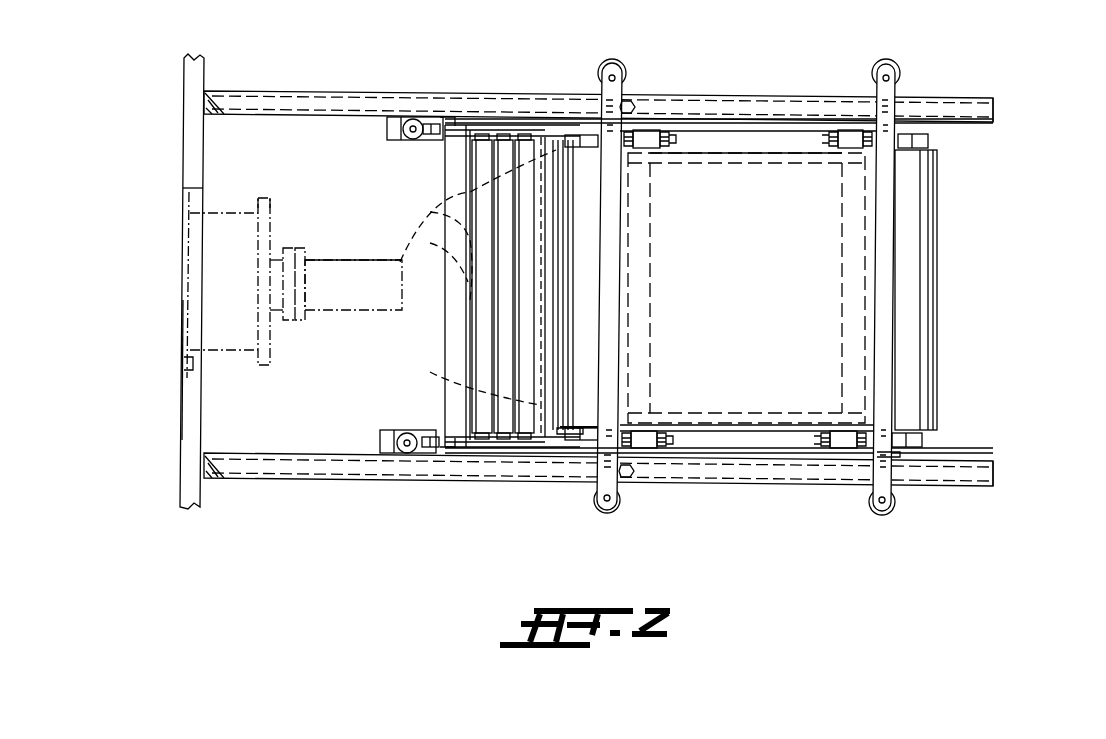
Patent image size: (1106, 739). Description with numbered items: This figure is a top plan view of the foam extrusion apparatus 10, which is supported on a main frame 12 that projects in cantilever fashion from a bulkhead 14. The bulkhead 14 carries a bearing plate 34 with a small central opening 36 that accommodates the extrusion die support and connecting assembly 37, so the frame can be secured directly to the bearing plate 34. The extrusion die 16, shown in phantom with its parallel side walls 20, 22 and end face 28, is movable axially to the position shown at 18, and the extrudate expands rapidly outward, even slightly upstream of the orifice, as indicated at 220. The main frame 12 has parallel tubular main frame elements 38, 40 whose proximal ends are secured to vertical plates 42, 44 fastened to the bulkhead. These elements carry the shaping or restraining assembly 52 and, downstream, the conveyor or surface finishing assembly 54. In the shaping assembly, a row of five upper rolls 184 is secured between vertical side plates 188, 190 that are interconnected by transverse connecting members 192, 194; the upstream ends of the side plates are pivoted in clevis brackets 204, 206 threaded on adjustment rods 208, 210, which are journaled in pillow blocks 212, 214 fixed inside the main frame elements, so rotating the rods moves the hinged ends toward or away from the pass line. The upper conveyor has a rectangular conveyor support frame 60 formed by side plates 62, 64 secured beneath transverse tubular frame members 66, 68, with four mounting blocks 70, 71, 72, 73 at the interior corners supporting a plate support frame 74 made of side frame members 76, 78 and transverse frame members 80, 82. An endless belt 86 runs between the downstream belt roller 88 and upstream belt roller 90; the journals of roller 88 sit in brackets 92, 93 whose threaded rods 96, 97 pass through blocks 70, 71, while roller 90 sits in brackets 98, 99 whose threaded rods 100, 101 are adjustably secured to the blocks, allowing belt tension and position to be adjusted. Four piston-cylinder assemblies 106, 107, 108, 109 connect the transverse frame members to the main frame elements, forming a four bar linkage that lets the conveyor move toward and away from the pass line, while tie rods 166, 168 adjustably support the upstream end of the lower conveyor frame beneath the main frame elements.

The foam extrusion apparatus 10 is at (1018, 168).
The main frame 12 is at (332, 482).
The bulkhead 14 is at (180, 483).
The extrusion die 16 is at (323, 313).
The axially moved die position 18 is at (440, 313).
The side wall 20 is at (380, 312).
The side wall 22 is at (360, 258).
The end face 28 is at (455, 260).
The bearing plate 34 is at (182, 417).
The central opening 36 is at (184, 362).
The extrusion die support and connecting assembly 37 is at (262, 360).
The main frame element 38 is at (990, 481).
The main frame element 40 is at (985, 100).
The vertical plate 42 is at (220, 458).
The vertical plate 44 is at (214, 108).
The shaping or restraining assembly 52 is at (534, 93).
The conveyor or surface finishing assembly 54 is at (735, 93).
The conveyor support frame 60 is at (713, 456).
The side plate 62 is at (755, 454).
The side plate 64 is at (798, 121).
The transverse tubular frame member 66 is at (912, 222).
The transverse tubular frame member 68 is at (606, 214).
The mounting block 70 is at (845, 449).
The mounting block 71 is at (850, 134).
The mounting block 72 is at (645, 449).
The mounting block 73 is at (650, 134).
The plate support frame 74 is at (876, 337).
The side frame member 76 is at (752, 412).
The side frame member 78 is at (724, 162).
The transverse frame member 80 is at (842, 320).
The transverse frame member 82 is at (650, 328).
The endless belt 86 is at (800, 448).
The belt roller 88 is at (922, 440).
The belt roller 90 is at (566, 436).
The bracket 92 is at (912, 456).
The bracket 93 is at (928, 140).
The threaded rod 96 is at (824, 431).
The threaded rod 97 is at (832, 141).
The bracket 98 is at (584, 441).
The bracket 99 is at (586, 135).
The threaded rod 100 is at (670, 431).
The threaded rod 101 is at (678, 140).
The piston-cylinder assembly 106 is at (895, 508).
The piston-cylinder assembly 107 is at (899, 76).
The piston-cylinder assembly 108 is at (602, 507).
The piston-cylinder assembly 109 is at (626, 78).
The tie rod 166 is at (632, 478).
The tie rod 168 is at (631, 104).
The rolls 184 is at (462, 202).
The side plate 188 is at (482, 447).
The side plate 190 is at (479, 137).
The transverse connecting member 192 is at (553, 272).
The transverse connecting member 194 is at (450, 382).
The clevis bracket 204 is at (428, 449).
The clevis bracket 206 is at (437, 124).
The adjustment rod 208 is at (408, 438).
The adjustment rod 210 is at (413, 134).
The pillow block 212 is at (382, 446).
The pillow block 214 is at (387, 130).
The extrudate expansion 220 is at (448, 216).